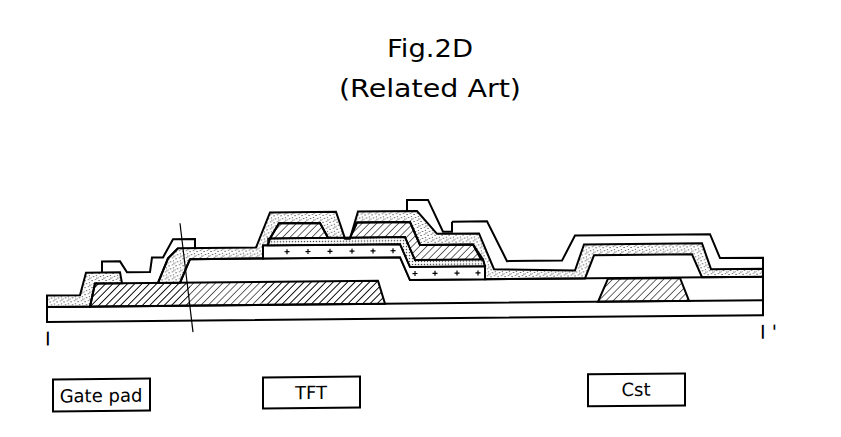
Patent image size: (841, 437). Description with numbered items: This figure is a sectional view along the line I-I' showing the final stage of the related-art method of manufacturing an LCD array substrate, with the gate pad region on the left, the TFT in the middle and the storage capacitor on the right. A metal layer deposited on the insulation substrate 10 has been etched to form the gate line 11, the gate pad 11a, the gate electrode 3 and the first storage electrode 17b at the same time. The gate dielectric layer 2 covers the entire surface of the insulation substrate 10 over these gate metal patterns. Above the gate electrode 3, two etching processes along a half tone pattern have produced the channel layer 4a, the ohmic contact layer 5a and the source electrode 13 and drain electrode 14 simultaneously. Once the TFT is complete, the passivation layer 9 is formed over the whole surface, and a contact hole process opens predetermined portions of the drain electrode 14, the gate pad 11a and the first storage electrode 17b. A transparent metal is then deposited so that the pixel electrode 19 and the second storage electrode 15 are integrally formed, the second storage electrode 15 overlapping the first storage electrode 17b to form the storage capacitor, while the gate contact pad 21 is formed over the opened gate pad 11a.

The gate dielectric layer 2 is at (492, 295).
The gate electrode 3 is at (337, 287).
The channel layer 4a is at (321, 253).
The ohmic contact layer 5a is at (303, 263).
The passivation layer 9 is at (410, 209).
The insulation substrate 10 is at (730, 317).
The gate line 11 is at (233, 302).
The gate pad 11a is at (140, 302).
The source electrode 13 is at (288, 230).
The drain electrode 14 is at (379, 229).
The second storage electrode 15 is at (646, 249).
The first storage electrode 17b is at (656, 306).
The pixel electrode 19 is at (740, 268).
The gate contact pad 21 is at (114, 272).